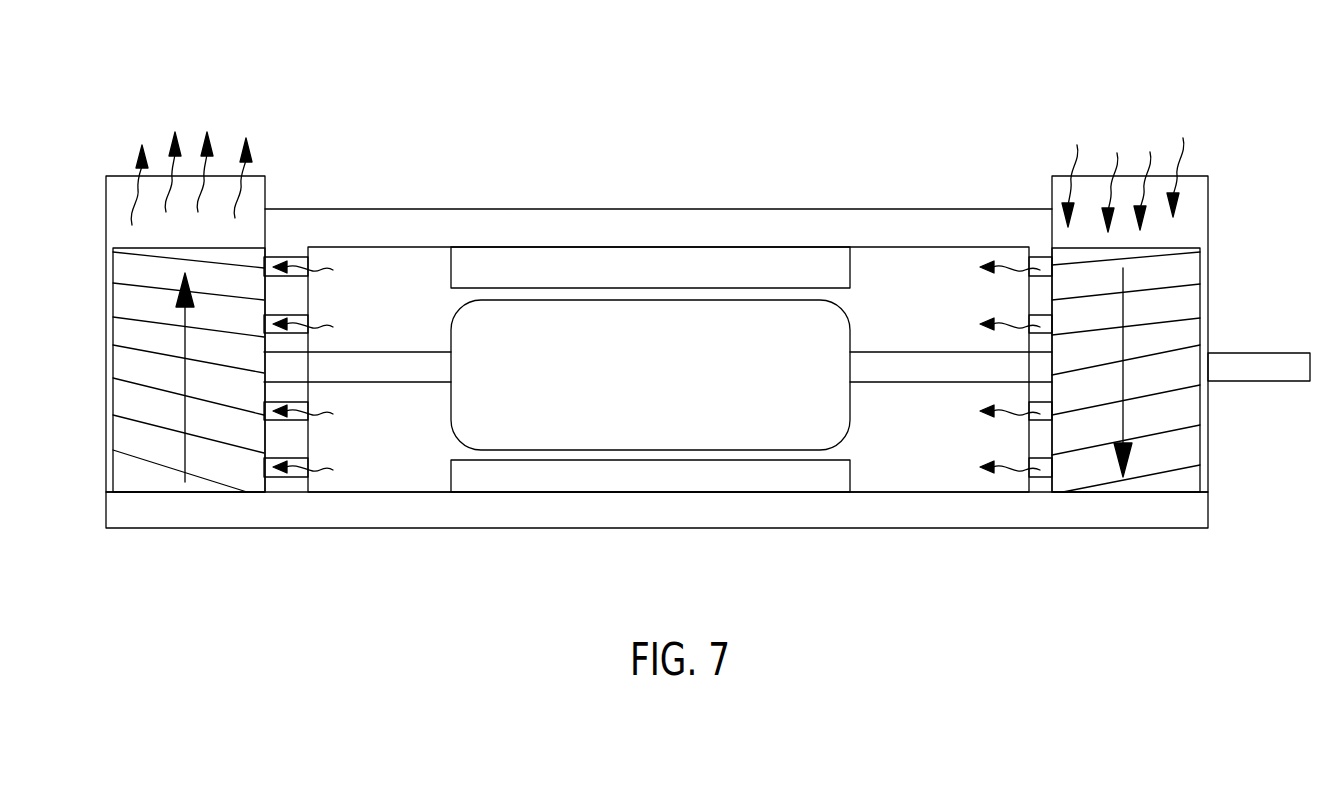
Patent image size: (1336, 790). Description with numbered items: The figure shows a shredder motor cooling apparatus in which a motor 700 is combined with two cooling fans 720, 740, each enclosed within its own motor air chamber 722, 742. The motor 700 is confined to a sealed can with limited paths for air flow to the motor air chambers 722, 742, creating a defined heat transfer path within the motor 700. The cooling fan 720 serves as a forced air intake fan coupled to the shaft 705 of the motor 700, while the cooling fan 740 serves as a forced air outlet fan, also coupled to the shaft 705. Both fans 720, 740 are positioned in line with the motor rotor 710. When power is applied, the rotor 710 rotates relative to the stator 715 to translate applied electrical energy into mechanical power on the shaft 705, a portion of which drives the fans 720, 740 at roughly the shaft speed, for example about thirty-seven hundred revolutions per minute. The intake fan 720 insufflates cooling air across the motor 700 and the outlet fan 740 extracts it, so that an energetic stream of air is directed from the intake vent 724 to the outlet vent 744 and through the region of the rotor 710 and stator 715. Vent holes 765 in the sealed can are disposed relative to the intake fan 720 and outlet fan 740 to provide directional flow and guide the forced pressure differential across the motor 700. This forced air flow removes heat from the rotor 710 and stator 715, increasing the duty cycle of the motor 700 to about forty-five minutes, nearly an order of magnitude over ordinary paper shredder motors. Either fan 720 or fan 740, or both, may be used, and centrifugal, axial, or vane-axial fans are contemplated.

The motor 700 is at (775, 180).
The shaft 705 is at (1250, 382).
The rotor 710 is at (753, 390).
The stator 715 is at (753, 492).
The cooling fan 720 is at (1210, 312).
The motor air chamber 722 is at (1208, 477).
The intake vent 724 is at (1208, 200).
The cooling fan 740 is at (298, 188).
The motor air chamber 742 is at (113, 478).
The outlet vent 744 is at (106, 197).
The vent holes 765 is at (308, 405).